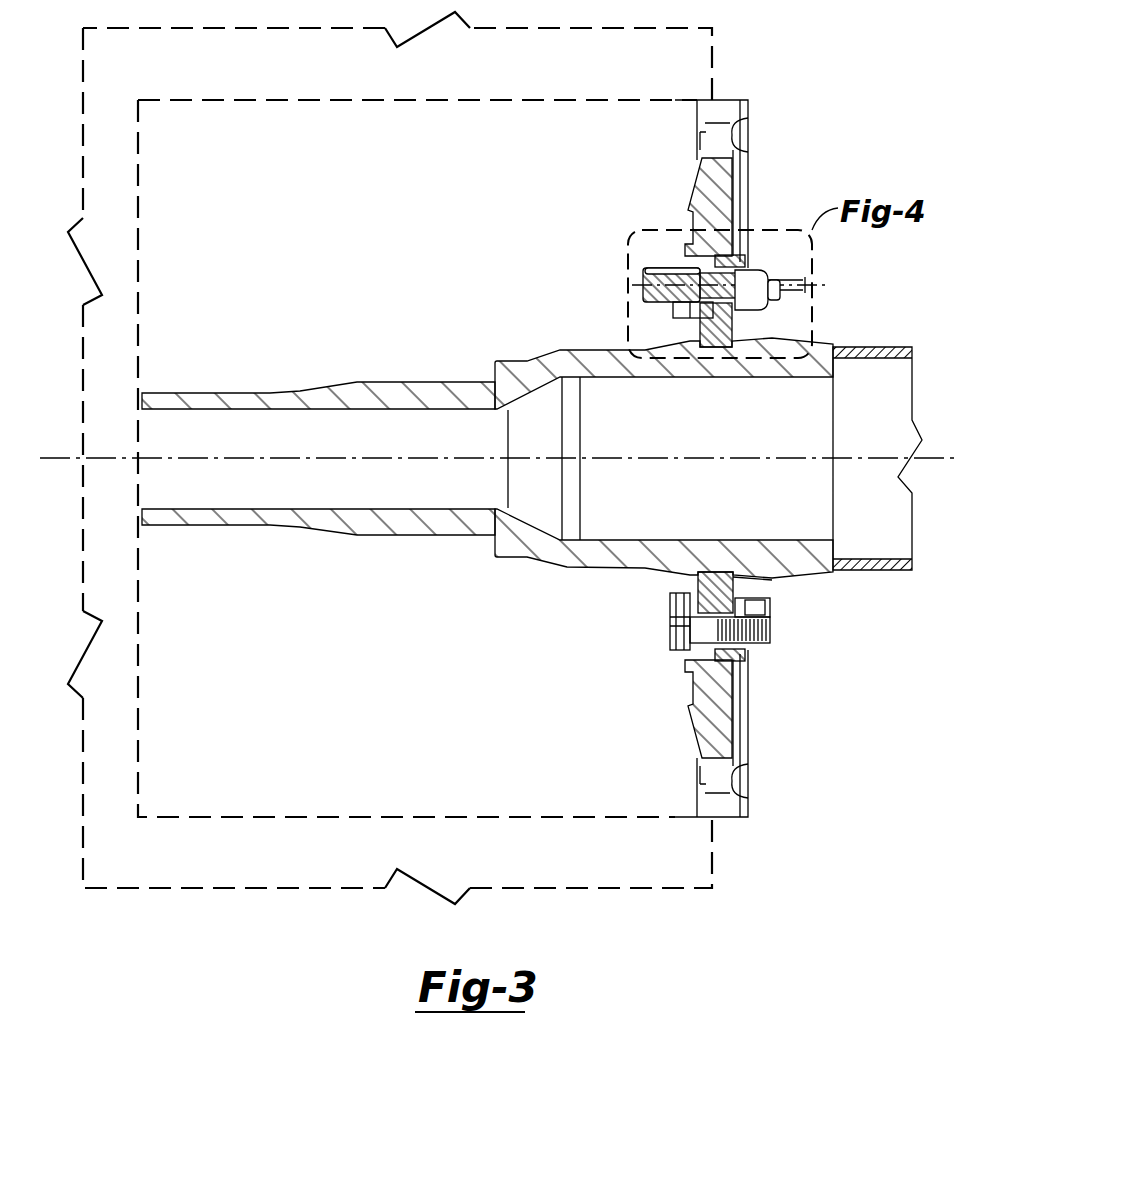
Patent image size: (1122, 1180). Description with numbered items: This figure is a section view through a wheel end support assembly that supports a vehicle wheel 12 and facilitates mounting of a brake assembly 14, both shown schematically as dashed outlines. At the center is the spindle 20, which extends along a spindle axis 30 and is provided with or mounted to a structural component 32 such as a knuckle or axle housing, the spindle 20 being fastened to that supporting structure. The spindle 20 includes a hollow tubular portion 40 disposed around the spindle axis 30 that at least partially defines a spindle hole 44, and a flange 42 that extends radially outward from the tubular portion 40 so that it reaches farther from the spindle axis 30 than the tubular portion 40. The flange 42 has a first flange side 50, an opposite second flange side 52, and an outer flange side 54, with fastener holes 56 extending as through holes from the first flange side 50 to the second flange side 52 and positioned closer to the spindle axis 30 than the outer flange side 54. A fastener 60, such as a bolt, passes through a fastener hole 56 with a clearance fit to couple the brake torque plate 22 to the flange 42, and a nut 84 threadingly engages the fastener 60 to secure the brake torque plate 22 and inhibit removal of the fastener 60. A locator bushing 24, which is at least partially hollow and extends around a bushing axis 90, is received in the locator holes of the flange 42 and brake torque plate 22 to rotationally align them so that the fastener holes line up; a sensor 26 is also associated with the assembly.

The vehicle wheel 12 is at (83, 822).
The brake assembly 14 is at (138, 718).
The spindle 20 is at (488, 360).
The brake torque plate 22 is at (722, 92).
The locator bushing 24 is at (652, 268).
The sensor 26 is at (645, 298).
The spindle axis 30 is at (90, 456).
The structural component 32 is at (860, 572).
The tubular portion 40 is at (364, 381).
The flange 42 is at (733, 326).
The spindle hole 44 is at (165, 486).
The first flange side 50 is at (698, 582).
The second flange side 52 is at (738, 580).
The outer flange side 54 is at (748, 656).
The fastener hole 56 is at (690, 650).
The fastener 60 is at (688, 318).
The nut 84 is at (755, 636).
The axis 90 is at (632, 284).